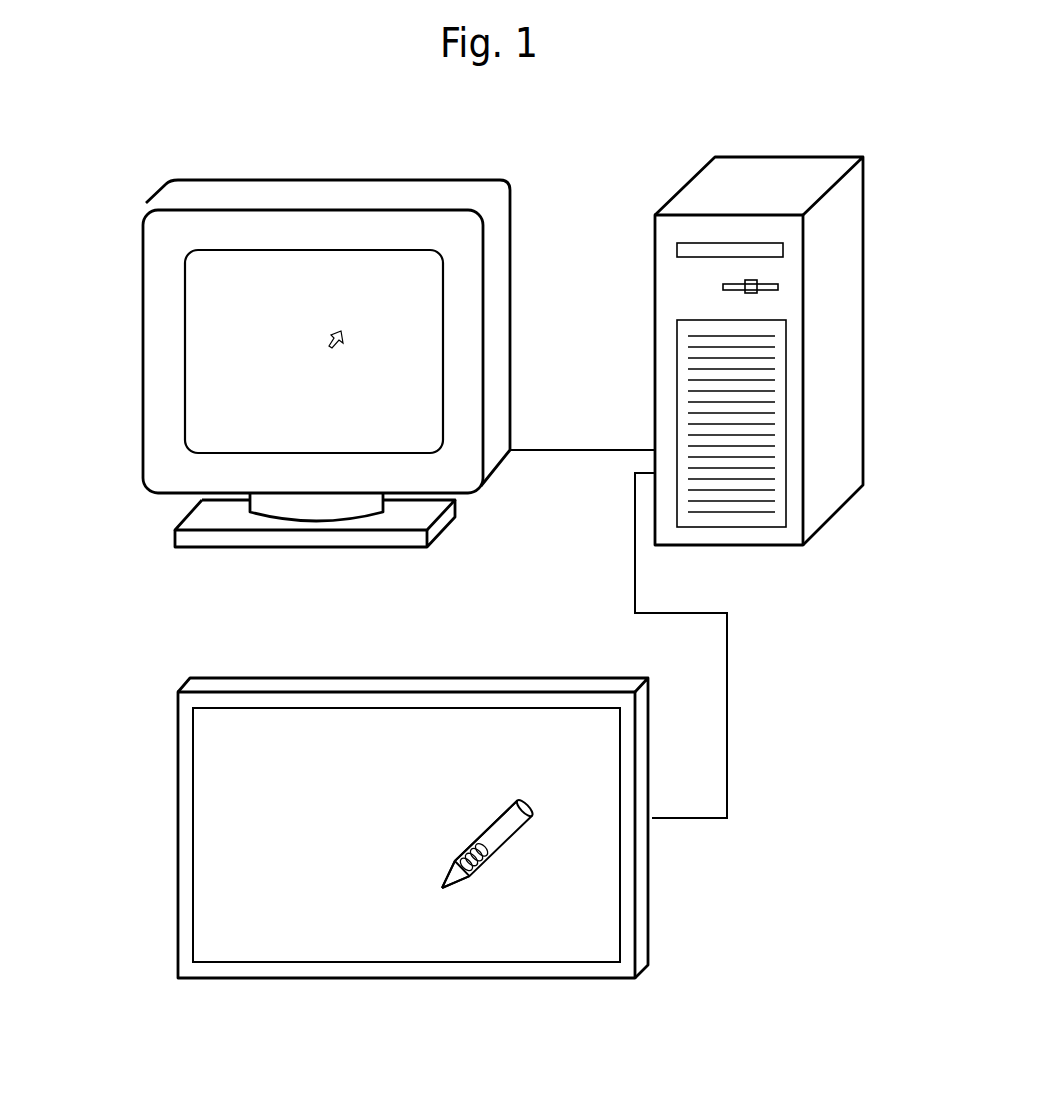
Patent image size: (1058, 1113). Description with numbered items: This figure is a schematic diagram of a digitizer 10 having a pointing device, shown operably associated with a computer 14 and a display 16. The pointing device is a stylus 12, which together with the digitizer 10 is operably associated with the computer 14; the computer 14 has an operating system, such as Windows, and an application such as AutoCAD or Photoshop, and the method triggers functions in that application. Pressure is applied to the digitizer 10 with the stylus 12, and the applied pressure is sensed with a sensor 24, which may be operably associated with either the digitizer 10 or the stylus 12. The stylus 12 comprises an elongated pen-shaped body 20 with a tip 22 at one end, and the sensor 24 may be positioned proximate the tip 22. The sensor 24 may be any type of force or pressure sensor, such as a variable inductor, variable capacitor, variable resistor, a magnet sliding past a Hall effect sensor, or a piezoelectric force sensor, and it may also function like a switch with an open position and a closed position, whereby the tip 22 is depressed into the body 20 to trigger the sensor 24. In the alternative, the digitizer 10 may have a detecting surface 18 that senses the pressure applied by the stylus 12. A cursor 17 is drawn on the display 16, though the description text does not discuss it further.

The digitizer 10 is at (145, 765).
The stylus 12 is at (485, 833).
The computer 14 is at (908, 320).
The display 16 is at (100, 322).
The cursor 17 is at (365, 322).
The detecting surface 18 is at (369, 926).
The elongated pen-shaped body 20 is at (515, 860).
The tip 22 is at (421, 870).
The sensor 24 is at (473, 850).